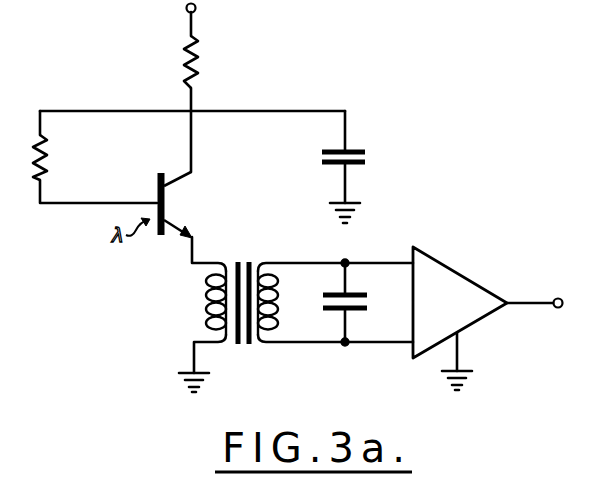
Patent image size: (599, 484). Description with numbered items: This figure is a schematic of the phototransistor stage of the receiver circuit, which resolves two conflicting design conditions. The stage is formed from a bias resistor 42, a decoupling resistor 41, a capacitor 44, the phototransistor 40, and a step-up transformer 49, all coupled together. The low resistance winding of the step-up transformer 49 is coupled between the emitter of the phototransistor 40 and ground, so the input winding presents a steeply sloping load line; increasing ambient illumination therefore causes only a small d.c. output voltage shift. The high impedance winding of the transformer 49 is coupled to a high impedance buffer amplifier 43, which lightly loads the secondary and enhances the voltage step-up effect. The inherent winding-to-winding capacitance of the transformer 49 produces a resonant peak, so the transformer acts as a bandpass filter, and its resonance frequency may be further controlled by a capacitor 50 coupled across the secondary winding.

The phototransistor 40 is at (221, 211).
The decoupling resistor 41 is at (203, 62).
The bias resistor 42 is at (50, 163).
The high impedance buffer amplifier 43 is at (458, 272).
The capacitor 44 is at (367, 159).
The step-up transformer 49 is at (200, 301).
The capacitor 50 is at (368, 306).